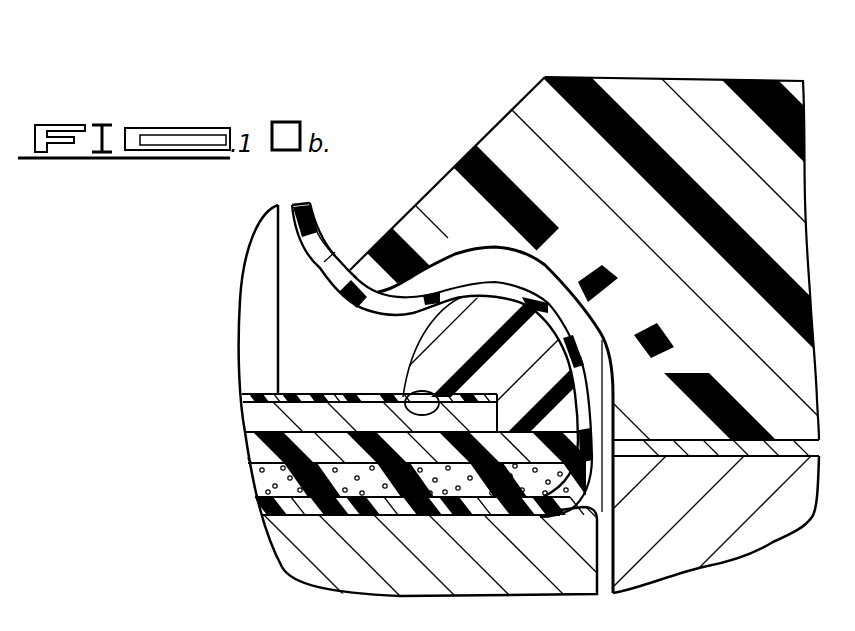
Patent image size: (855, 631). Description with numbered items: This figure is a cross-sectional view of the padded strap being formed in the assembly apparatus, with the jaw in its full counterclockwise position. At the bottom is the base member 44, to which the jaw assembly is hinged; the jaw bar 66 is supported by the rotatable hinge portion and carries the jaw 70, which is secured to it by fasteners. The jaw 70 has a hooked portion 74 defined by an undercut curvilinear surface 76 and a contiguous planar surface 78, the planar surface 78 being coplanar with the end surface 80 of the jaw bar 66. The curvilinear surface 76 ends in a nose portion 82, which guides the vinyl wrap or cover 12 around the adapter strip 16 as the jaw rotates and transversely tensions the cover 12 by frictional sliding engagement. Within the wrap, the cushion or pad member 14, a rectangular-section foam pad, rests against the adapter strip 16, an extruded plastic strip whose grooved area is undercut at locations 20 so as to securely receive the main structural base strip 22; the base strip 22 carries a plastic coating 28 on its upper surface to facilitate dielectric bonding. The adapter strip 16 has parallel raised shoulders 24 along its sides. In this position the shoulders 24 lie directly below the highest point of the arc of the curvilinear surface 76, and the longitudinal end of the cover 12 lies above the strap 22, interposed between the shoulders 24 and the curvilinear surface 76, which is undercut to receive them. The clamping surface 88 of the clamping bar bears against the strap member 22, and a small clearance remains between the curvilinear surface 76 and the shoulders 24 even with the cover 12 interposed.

The vinyl wrap or cover 12 is at (297, 200).
The cushion or pad member 14 is at (252, 480).
The adapter strip 16 is at (570, 350).
The undercut locations 20 is at (412, 400).
The main structural base strip 22 is at (243, 413).
The raised shoulders 24 is at (572, 268).
The plastic coating 28 is at (321, 394).
The base member 44 is at (300, 555).
The jaw bar 66 is at (773, 533).
The jaw 70 is at (730, 76).
The hooked portion 74 is at (383, 224).
The curvilinear surface 76 is at (452, 256).
The planar surface 78 is at (613, 395).
The end surface of the jaw bar 80 is at (603, 511).
The nose portion 82 is at (360, 266).
The clamping surface 88 is at (240, 290).